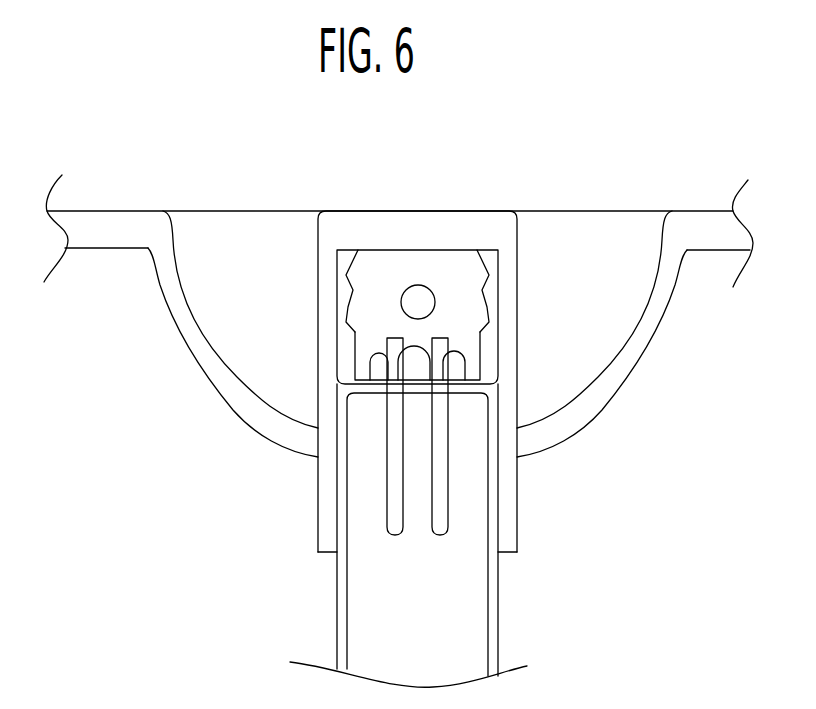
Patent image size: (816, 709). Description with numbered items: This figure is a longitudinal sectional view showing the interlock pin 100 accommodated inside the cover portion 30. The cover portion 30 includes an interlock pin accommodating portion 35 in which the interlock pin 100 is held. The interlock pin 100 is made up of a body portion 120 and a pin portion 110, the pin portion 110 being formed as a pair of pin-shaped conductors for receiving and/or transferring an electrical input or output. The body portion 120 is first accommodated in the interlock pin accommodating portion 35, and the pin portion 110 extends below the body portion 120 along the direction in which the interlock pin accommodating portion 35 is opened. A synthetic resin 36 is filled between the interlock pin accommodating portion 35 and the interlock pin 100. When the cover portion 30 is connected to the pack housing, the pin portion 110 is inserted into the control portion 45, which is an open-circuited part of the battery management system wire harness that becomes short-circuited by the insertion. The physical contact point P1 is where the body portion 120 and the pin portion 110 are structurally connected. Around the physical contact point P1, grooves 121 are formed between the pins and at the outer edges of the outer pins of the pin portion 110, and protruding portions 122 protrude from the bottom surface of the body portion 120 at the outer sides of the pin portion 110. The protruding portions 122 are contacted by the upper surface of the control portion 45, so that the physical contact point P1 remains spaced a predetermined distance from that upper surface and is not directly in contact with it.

The cover portion 30 is at (700, 211).
The interlock pin 100 is at (172, 448).
The body portion 120 is at (357, 315).
The pin portion 110 is at (387, 480).
The synthetic resin 36 is at (487, 253).
The interlock pin accommodating portion 35 is at (490, 350).
The grooves 121 is at (460, 388).
The protruding portions 122 is at (457, 378).
The physical contact point P1 is at (452, 352).
The control portion 45 is at (333, 600).